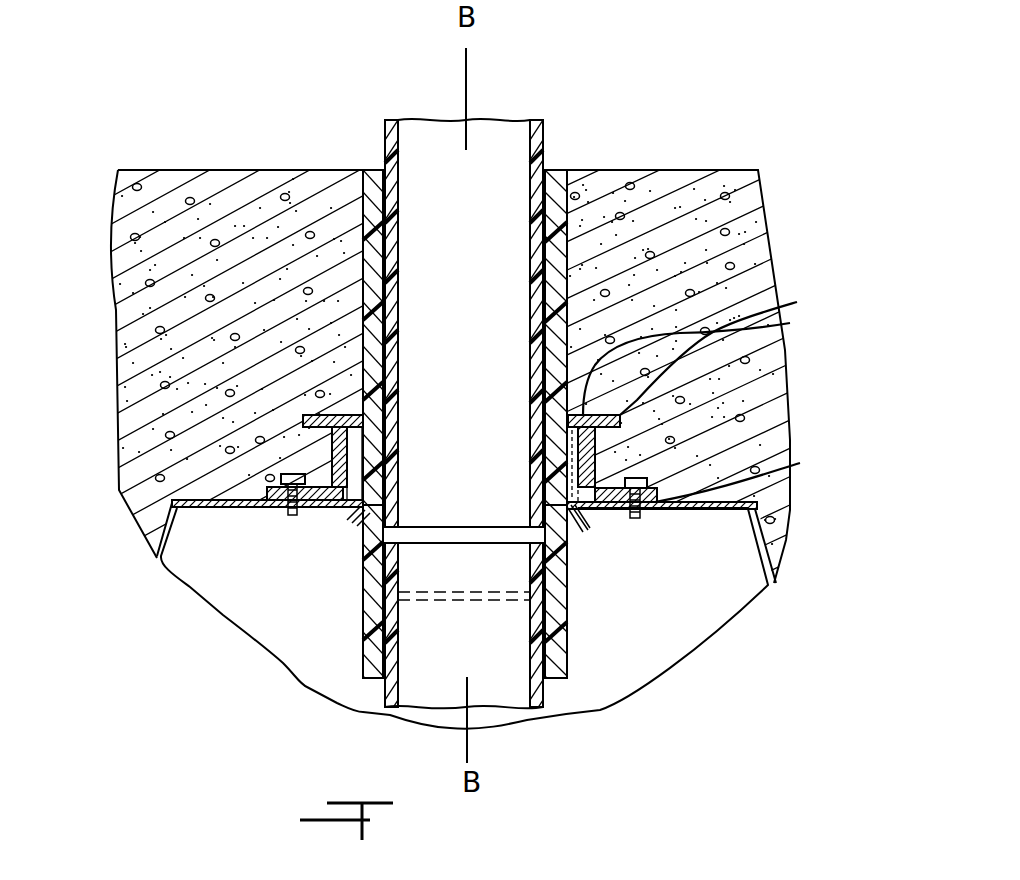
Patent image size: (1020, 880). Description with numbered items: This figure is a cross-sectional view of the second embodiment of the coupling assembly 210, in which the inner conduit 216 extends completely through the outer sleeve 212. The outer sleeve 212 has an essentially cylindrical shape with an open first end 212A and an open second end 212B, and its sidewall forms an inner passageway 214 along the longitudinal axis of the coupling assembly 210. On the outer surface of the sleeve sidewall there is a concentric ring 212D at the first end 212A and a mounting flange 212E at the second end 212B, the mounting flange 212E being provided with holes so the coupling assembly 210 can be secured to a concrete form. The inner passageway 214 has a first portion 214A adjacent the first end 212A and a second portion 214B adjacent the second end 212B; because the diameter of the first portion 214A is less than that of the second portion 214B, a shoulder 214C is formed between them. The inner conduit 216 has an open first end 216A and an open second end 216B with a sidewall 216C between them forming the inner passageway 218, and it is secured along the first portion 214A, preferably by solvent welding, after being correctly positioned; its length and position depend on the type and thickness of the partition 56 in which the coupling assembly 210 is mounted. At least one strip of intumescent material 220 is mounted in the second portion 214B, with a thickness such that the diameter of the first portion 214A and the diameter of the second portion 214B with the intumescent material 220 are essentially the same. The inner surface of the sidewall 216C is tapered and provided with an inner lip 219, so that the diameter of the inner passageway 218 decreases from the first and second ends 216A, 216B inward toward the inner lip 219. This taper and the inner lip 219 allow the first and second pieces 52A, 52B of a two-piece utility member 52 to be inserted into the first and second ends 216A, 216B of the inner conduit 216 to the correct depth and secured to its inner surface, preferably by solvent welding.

The utility member 52 is at (378, 132).
The first piece 52A is at (545, 146).
The second piece 52B is at (547, 700).
The partition 56 is at (768, 233).
The coupling assembly 210 is at (632, 196).
The outer sleeve 212 is at (615, 452).
The first end 212A is at (749, 343).
The second end 212B is at (602, 513).
The concentric ring 212D is at (734, 360).
The mounting flange 212E is at (768, 475).
The inner passageway 214 is at (358, 532).
The first portion 214A is at (356, 515).
The second portion 214B is at (398, 405).
The shoulder 214C is at (583, 530).
The inner conduit 216 is at (592, 193).
The first end 216A is at (585, 195).
The second end 216B is at (556, 670).
The sidewall 216C is at (578, 250).
The inner passageway 218 is at (368, 165).
The inner lip 219 is at (572, 546).
The intumescent material 220 is at (397, 432).